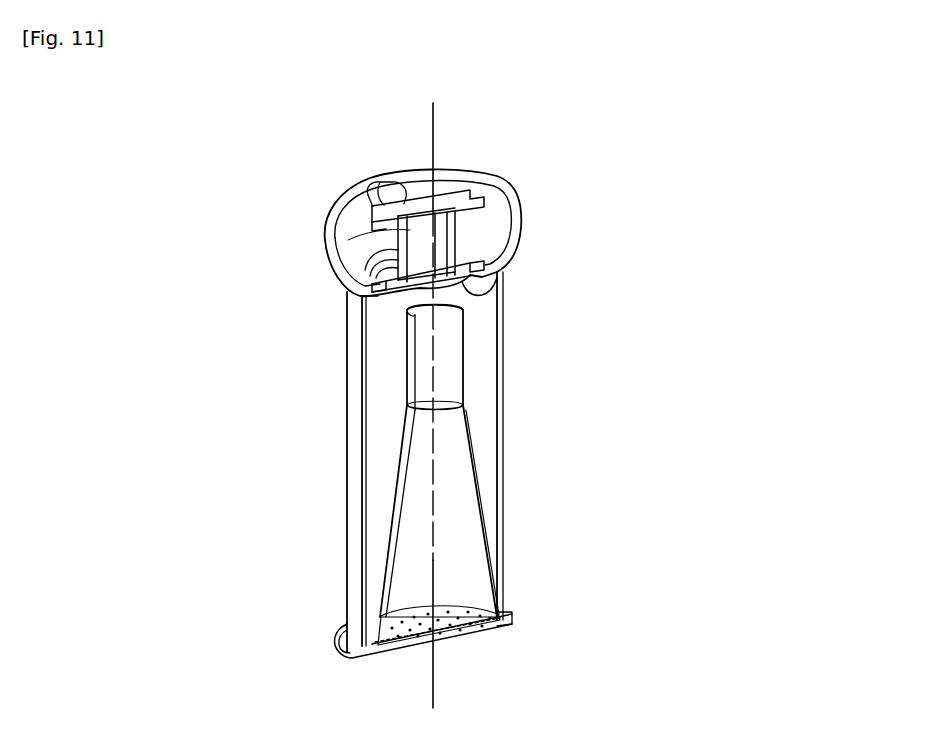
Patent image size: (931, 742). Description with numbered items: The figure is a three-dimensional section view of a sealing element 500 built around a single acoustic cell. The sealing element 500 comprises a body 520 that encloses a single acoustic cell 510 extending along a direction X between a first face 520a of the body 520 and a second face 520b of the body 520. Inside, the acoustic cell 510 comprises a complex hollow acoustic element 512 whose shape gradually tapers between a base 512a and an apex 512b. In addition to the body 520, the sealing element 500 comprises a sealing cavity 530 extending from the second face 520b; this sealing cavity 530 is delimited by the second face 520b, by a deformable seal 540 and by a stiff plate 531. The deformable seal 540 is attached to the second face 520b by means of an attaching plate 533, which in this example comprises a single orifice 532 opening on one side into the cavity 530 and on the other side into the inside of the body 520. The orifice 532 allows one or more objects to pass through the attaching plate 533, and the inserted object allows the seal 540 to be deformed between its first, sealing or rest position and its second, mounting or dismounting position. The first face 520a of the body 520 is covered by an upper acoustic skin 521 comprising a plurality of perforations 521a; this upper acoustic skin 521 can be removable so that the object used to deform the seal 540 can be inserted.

The sealing element 500 is at (637, 318).
The acoustic cell 510 is at (488, 418).
The complex hollow acoustic element 512 is at (458, 506).
The base 512a is at (465, 608).
The apex 512b is at (452, 345).
The body 520 is at (350, 461).
The first face 520a is at (488, 625).
The second face 520b is at (470, 291).
The upper acoustic skin 521 is at (372, 658).
The perforations 521a is at (405, 646).
The sealing cavity 530 is at (500, 232).
The stiff plate 531 is at (391, 182).
The orifice 532 is at (427, 246).
The attaching plate 533 is at (353, 277).
The deformable seal 540 is at (348, 238).
The direction X is at (450, 408).